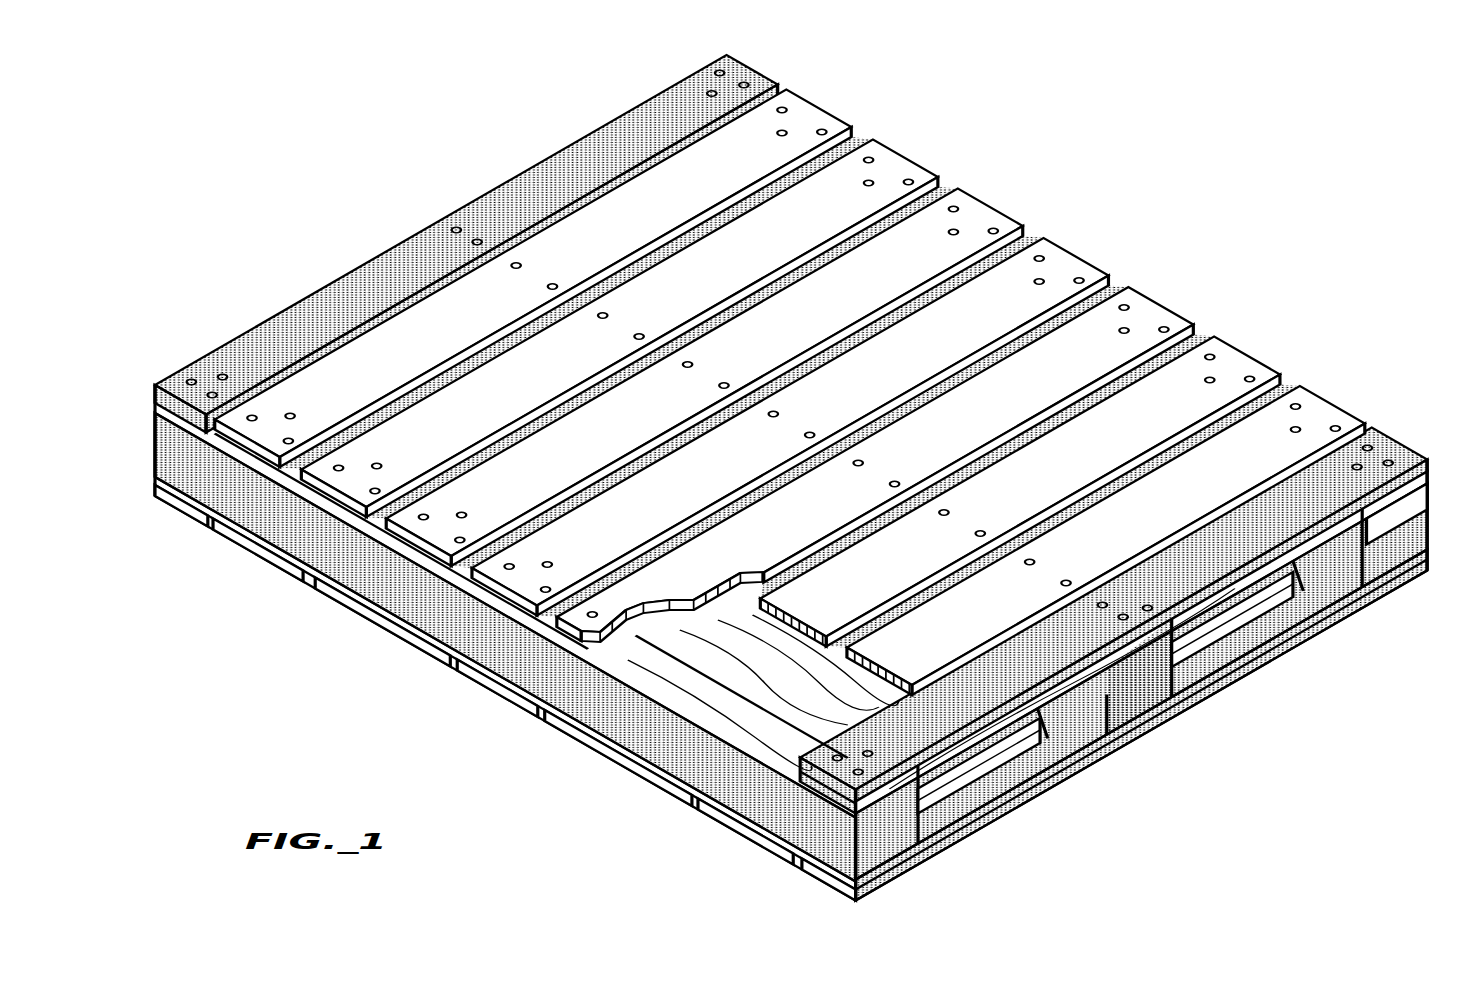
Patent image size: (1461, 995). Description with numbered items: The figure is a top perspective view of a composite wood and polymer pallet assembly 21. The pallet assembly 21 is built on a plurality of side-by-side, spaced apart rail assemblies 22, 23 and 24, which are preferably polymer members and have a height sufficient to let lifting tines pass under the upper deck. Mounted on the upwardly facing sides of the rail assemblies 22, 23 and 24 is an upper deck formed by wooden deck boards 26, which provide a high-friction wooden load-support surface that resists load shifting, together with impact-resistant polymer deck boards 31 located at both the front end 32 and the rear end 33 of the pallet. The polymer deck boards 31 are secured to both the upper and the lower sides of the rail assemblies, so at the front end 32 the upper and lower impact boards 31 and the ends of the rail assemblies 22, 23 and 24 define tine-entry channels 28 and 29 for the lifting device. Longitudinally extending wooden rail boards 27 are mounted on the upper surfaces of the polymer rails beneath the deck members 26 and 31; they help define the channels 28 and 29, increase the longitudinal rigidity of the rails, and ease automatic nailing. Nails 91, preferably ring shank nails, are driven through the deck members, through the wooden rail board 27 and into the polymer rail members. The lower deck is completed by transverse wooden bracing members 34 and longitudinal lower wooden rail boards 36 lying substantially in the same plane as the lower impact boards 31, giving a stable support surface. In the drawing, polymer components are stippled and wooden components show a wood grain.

The pallet assembly 21 is at (1181, 174).
The rail assembly 22 is at (560, 692).
The rail assembly 23 is at (1098, 702).
The rail assembly 24 is at (1338, 565).
The wooden deck board 26 is at (828, 123).
The wooden rail board 27 is at (707, 712).
The tine-entry channel 28 is at (953, 804).
The tine-entry channel 29 is at (1260, 619).
The polymer deck board 31 is at (396, 246).
The front end 32 is at (1162, 741).
The rear end 33 is at (484, 181).
The transverse bracing member 34 is at (254, 553).
The lower wooden rail board 36 is at (352, 612).
The nail 91 is at (748, 72).